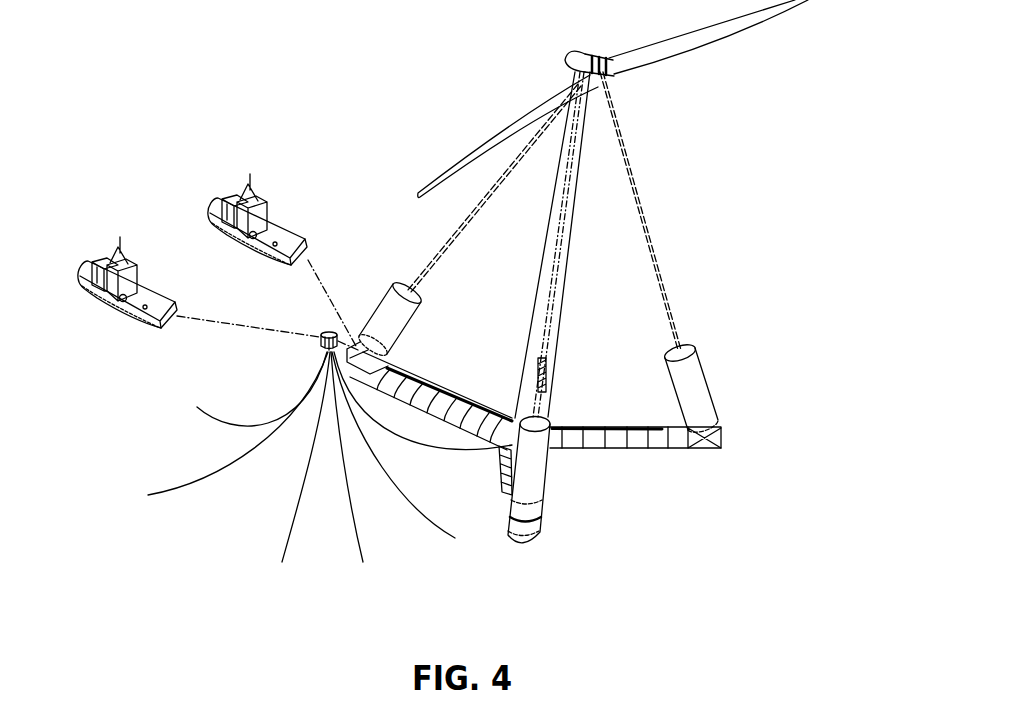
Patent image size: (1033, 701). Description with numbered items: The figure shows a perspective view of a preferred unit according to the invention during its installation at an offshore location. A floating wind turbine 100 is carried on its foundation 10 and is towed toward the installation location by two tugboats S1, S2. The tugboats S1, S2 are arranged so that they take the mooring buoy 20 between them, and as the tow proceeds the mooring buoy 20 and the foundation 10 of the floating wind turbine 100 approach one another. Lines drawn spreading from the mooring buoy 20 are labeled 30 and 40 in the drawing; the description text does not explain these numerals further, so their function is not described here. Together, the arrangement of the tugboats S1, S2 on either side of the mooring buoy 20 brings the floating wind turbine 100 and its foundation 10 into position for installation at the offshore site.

The floating wind turbine 100 is at (577, 271).
The foundation 10 is at (592, 449).
The mooring buoy 20 is at (317, 337).
The mooring lines 30 is at (303, 495).
The mooring lines 40 is at (303, 495).
The tugboat S1 is at (97, 301).
The tugboat S2 is at (218, 225).